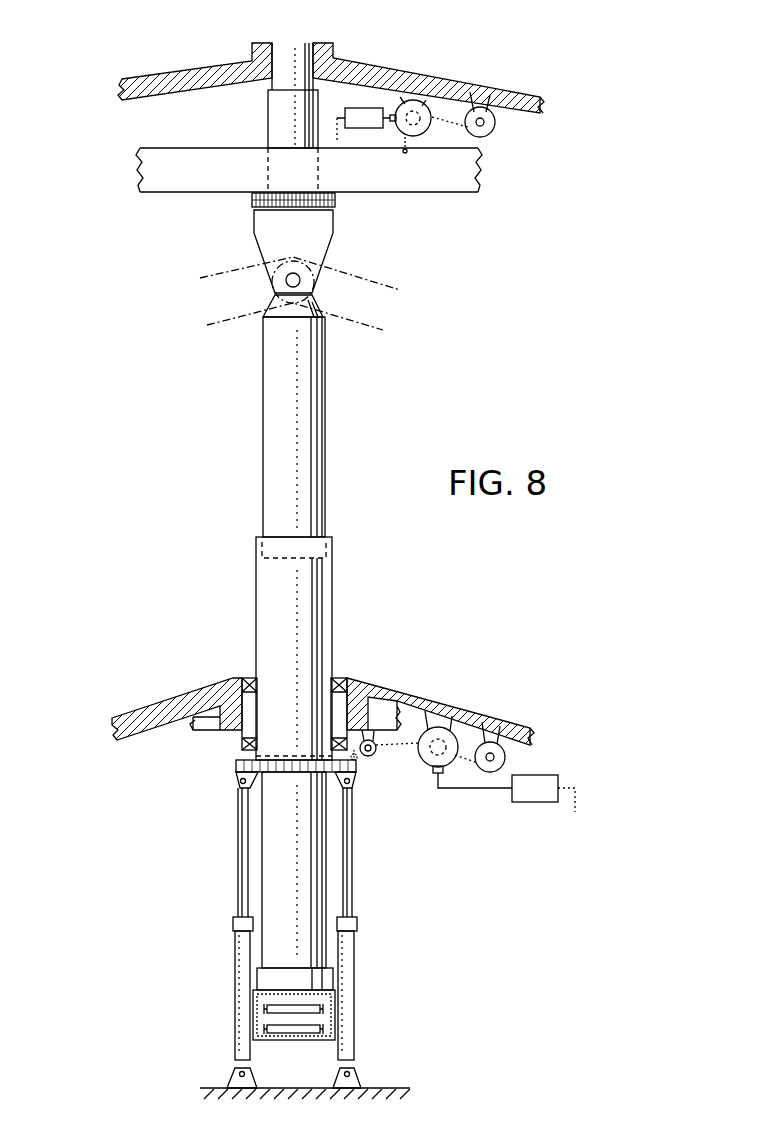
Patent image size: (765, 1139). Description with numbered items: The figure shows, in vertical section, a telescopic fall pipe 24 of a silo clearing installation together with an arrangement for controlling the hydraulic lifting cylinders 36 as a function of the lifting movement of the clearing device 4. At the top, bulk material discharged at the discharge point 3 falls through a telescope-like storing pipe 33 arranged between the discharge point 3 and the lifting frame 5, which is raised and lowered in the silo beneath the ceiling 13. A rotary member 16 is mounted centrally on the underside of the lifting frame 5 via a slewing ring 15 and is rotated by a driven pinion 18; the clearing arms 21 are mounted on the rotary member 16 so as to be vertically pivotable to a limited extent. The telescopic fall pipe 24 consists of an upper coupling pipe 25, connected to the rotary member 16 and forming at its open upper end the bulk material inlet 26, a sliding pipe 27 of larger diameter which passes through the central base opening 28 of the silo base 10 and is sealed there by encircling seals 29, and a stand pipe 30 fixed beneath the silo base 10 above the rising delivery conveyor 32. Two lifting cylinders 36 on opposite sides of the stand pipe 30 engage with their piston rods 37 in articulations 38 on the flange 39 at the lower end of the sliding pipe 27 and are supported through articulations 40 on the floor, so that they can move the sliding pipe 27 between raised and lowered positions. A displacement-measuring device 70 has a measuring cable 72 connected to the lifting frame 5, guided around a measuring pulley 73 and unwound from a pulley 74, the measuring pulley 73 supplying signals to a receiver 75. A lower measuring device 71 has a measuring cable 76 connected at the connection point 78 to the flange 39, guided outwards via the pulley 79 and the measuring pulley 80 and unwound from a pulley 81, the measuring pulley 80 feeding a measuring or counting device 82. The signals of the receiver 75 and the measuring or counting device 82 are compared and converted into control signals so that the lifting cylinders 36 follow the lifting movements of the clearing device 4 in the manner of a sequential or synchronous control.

The discharge point 3 is at (310, 44).
The clearing device 4 is at (450, 222).
The lifting frame 5 is at (167, 158).
The silo base 10 is at (135, 718).
The ceiling 13 is at (420, 82).
The slewing ring 15 is at (250, 203).
The rotary member 16 is at (325, 232).
The driven pinion 18 is at (328, 198).
The clearing arms 21 is at (222, 284).
The telescopic fall pipe 24 is at (250, 491).
The coupling pipe 25 is at (322, 437).
The bulk material inlet 26 is at (300, 320).
The sliding pipe 27 is at (322, 600).
The base opening 28 is at (390, 672).
The encircling seals 29 is at (341, 672).
The stand pipe 30 is at (322, 852).
The delivery conveyor 32 is at (322, 1022).
The storing pipe 33 is at (270, 118).
The hydraulic lifting cylinders 36 is at (355, 948).
The piston rods 37 is at (238, 857).
The articulations 38 is at (238, 788).
The flange 39 is at (236, 766).
The articulations 40 is at (357, 1082).
The displacement-measuring device 70 is at (508, 148).
The measuring device 71 is at (538, 758).
The measuring cable 72 is at (448, 116).
The measuring pulley 73 is at (427, 136).
The pulley 74 is at (498, 125).
The receiver 75 is at (365, 110).
The measuring cable 76 is at (405, 742).
The connection point 78 is at (358, 760).
The pulley 79 is at (377, 756).
The measuring pulley 80 is at (446, 764).
The pulley 81 is at (513, 735).
The measuring or counting device 82 is at (540, 805).